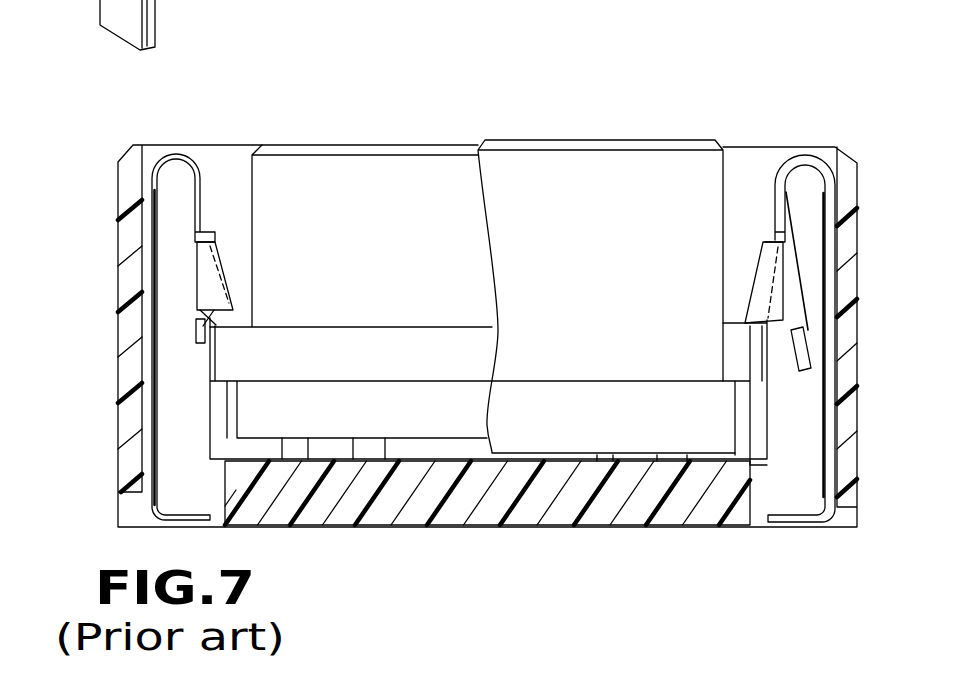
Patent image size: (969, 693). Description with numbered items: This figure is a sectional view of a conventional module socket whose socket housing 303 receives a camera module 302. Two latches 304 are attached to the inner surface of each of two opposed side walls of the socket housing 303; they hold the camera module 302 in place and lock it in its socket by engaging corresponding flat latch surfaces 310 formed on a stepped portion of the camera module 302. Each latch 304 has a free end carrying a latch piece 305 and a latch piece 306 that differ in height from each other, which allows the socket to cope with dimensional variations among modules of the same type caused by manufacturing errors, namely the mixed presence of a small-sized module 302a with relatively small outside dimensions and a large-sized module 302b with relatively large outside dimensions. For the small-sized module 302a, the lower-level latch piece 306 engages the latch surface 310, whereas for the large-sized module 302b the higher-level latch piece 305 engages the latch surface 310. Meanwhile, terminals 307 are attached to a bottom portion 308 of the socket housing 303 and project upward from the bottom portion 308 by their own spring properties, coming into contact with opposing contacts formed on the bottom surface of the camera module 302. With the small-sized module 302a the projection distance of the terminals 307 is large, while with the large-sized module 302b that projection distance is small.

The camera module 302 is at (472, 233).
The small-sized module 302a is at (382, 173).
The large-sized module 302b is at (535, 173).
The socket housing 303 is at (118, 207).
The latch 304 is at (182, 163).
The latch piece 305 is at (207, 253).
The latch piece 306 is at (210, 317).
The terminal 307 is at (372, 442).
The bottom portion 308 is at (702, 502).
The latch surface 310 is at (233, 322).